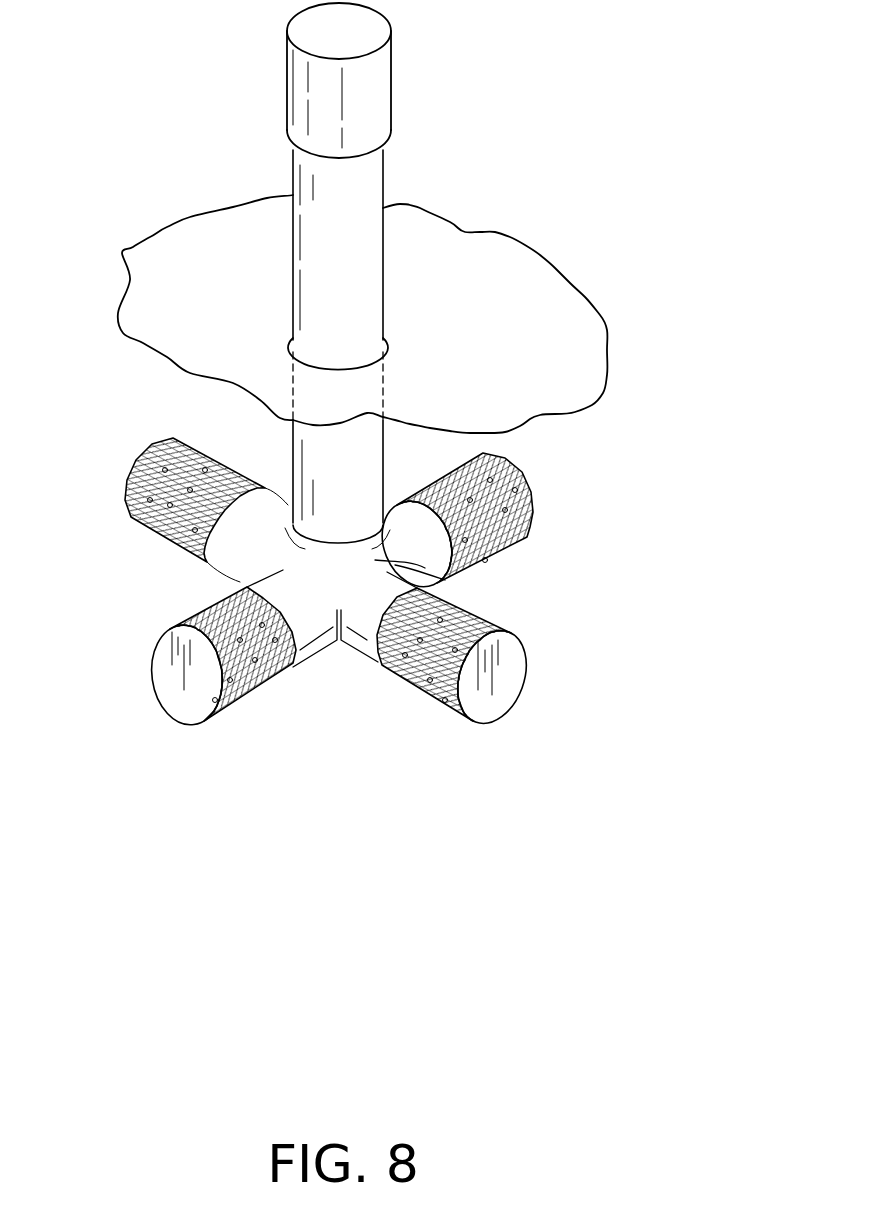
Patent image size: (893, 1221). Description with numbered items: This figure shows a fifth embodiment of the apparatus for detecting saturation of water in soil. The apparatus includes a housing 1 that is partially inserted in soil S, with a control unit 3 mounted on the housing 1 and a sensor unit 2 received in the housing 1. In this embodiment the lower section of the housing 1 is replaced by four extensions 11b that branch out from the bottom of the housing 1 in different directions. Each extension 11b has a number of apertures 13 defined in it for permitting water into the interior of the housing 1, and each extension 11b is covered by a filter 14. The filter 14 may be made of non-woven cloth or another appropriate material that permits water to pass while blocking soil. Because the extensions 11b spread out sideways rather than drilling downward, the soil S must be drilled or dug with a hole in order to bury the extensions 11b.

The housing 1 is at (350, 292).
The sensor unit 2 is at (352, 604).
The control unit 3 is at (368, 103).
The soil S is at (553, 307).
The apertures 13 is at (127, 474).
The filter 14 is at (157, 448).
The extensions 11b is at (275, 500).